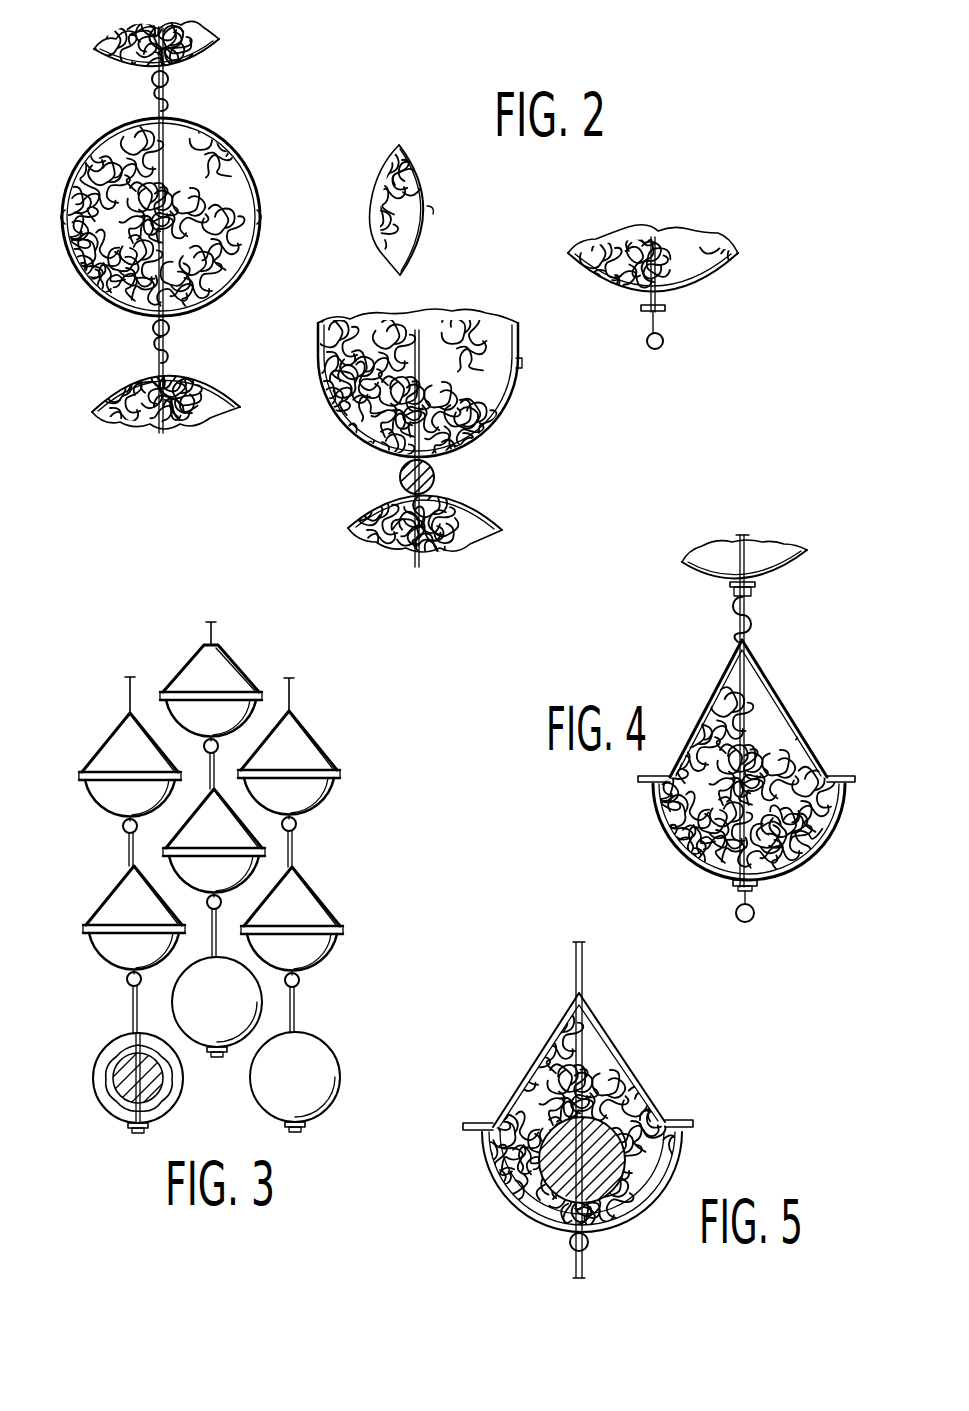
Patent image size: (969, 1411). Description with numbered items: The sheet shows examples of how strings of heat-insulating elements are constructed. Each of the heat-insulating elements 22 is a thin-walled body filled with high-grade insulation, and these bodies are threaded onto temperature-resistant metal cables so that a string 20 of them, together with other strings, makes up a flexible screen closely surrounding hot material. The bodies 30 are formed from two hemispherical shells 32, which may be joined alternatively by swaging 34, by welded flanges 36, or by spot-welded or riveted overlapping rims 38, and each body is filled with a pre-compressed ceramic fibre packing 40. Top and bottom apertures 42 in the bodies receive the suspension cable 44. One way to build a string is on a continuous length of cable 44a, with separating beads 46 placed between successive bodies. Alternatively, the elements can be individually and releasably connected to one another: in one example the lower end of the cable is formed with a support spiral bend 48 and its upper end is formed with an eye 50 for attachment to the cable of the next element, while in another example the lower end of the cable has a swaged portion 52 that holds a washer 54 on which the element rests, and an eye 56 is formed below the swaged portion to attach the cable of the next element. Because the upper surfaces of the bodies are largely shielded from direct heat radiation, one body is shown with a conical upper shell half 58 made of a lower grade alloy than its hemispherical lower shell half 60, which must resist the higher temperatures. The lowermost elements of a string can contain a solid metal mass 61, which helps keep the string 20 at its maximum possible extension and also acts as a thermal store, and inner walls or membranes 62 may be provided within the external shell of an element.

In FIG. 3, the string 20 is at (207, 633).
In FIG. 3, the heat-insulating elements 22 is at (108, 967).
In FIG. 2, the bodies 30 is at (86, 302).
In FIG. 2, the hemispherical shells 32 is at (247, 270).
In FIG. 2, the swaging 34 is at (264, 213).
In FIG. 2, the welded flanges 36 is at (431, 212).
In FIG. 2, the overlapping rims 38 is at (318, 368).
In FIG. 2, the pre-compressed ceramic fibre packing 40 is at (155, 178).
In FIG. 4, the pre-compressed ceramic fibre packing 40 is at (790, 765).
In FIG. 2, the top and bottom apertures 42 is at (171, 119).
In FIG. 2, the suspension cable 44 is at (108, 171).
In FIG. 2, the continuous length of cable 44a is at (437, 535).
In FIG. 2, the separating beads 46 is at (436, 478).
In FIG. 2, the support spiral bend 48 is at (170, 82).
In FIG. 2, the eye 50 is at (153, 89).
In FIG. 2, the swaged portion 52 is at (643, 317).
In FIG. 2, the washer 54 is at (668, 310).
In FIG. 2, the eye 56 is at (660, 353).
In FIG. 4, the eye 56 is at (736, 912).
In FIG. 4, the conical upper shell half 58 is at (780, 700).
In FIG. 4, the hemispherical lower shell half 60 is at (672, 842).
In FIG. 5, the solid metal mass 61 is at (545, 1175).
In FIG. 3, the solid metal mass 61 is at (157, 1083).
In FIG. 5, the inner walls or membranes 62 is at (636, 1193).